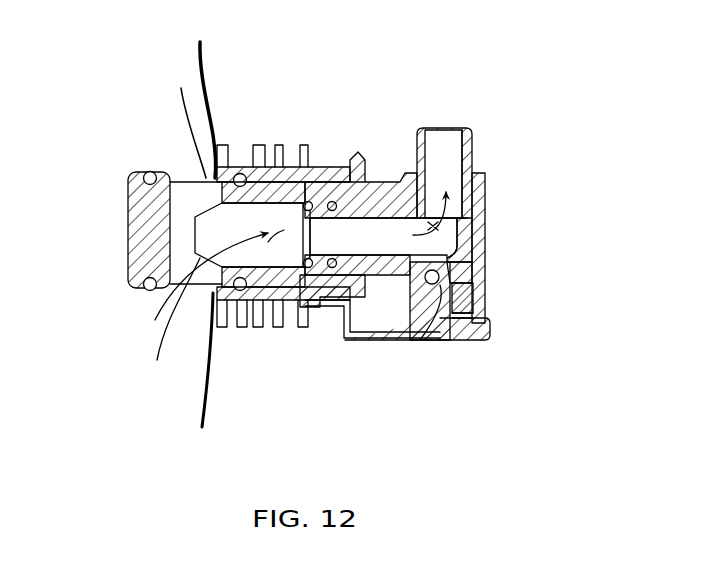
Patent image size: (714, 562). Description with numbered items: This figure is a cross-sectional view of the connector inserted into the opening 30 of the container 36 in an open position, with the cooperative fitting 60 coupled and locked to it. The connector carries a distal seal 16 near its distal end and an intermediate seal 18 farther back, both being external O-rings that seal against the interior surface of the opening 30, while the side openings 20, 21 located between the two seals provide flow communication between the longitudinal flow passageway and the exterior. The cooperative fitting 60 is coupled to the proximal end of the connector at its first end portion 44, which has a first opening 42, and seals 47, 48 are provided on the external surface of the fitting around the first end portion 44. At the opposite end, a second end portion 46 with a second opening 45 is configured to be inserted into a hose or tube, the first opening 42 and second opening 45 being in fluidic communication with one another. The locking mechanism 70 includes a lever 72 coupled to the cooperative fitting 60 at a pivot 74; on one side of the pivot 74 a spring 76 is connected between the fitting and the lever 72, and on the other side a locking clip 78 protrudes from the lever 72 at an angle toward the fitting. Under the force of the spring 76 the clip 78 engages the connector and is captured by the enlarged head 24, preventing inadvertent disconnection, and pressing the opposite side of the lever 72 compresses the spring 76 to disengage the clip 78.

The distal seal 16 is at (148, 291).
The intermediate seal 18 is at (238, 328).
The side opening 20 is at (283, 219).
The side opening 21 is at (199, 296).
The enlarged head 24 is at (360, 160).
The opening 30 is at (240, 132).
The container 36 is at (205, 50).
The first opening 42 is at (281, 248).
The first end portion 44 is at (323, 306).
The second opening 45 is at (443, 135).
The second end portion 46 is at (472, 150).
The seal 47 is at (314, 202).
The seal 48 is at (334, 203).
The cooperative fitting 60 is at (497, 232).
The locking mechanism 70 is at (447, 335).
The lever 72 is at (471, 343).
The pivot 74 is at (428, 336).
The spring 76 is at (472, 316).
The locking clip 78 is at (343, 337).